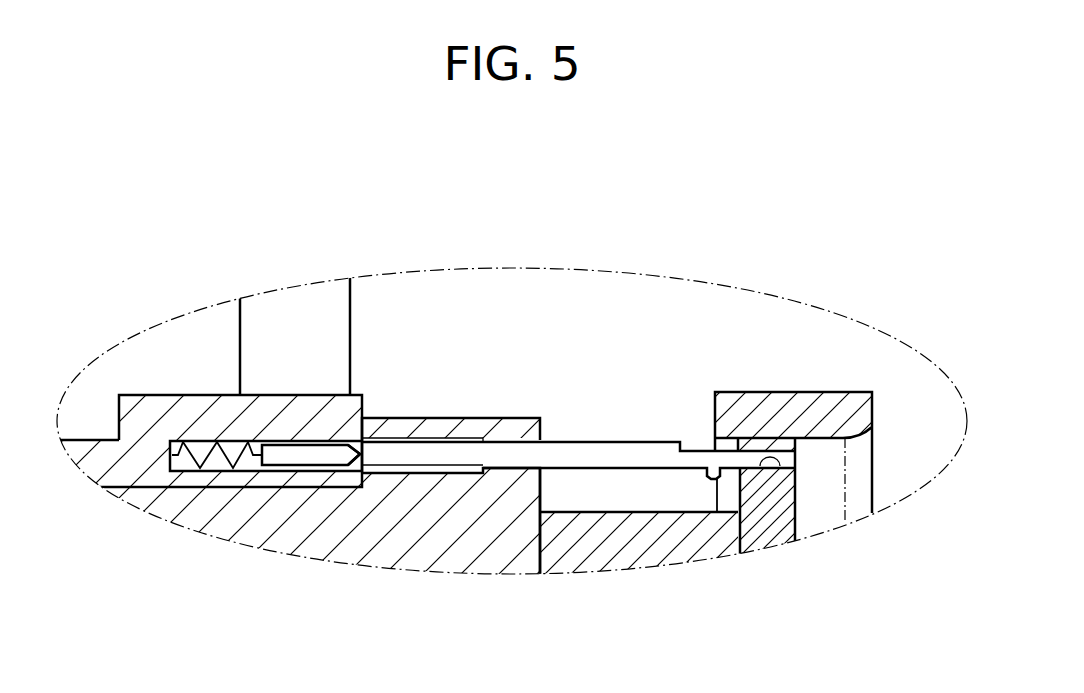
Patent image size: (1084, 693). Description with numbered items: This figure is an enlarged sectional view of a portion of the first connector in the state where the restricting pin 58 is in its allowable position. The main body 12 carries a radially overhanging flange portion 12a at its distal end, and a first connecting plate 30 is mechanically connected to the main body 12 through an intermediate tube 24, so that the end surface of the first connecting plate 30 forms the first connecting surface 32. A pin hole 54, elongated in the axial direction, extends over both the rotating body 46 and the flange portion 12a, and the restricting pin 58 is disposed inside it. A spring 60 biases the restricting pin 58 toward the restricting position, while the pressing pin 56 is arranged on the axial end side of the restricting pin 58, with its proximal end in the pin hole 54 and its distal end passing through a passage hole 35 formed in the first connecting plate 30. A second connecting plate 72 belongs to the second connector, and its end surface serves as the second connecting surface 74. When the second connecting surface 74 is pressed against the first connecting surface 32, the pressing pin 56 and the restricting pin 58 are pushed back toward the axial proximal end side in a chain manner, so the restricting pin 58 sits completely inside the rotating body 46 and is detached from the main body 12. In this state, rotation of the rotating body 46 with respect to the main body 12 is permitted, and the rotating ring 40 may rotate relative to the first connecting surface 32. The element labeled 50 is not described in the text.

The main body 12 is at (331, 548).
The flange portion 12a is at (513, 418).
The intermediate tube 24 is at (601, 558).
The first connecting plate 30 is at (815, 517).
The first connecting surface 32 is at (797, 522).
The passage hole 35 is at (777, 470).
The rotating ring 40 is at (784, 392).
The rotating body 46 is at (143, 395).
The lever / lead 50 is at (352, 307).
The pin hole 54 is at (336, 445).
The pressing pin 56 is at (632, 441).
The restricting pin 58 is at (298, 453).
The spring 60 is at (197, 441).
The second connecting plate 72 is at (850, 470).
The second connecting surface 74 is at (800, 483).